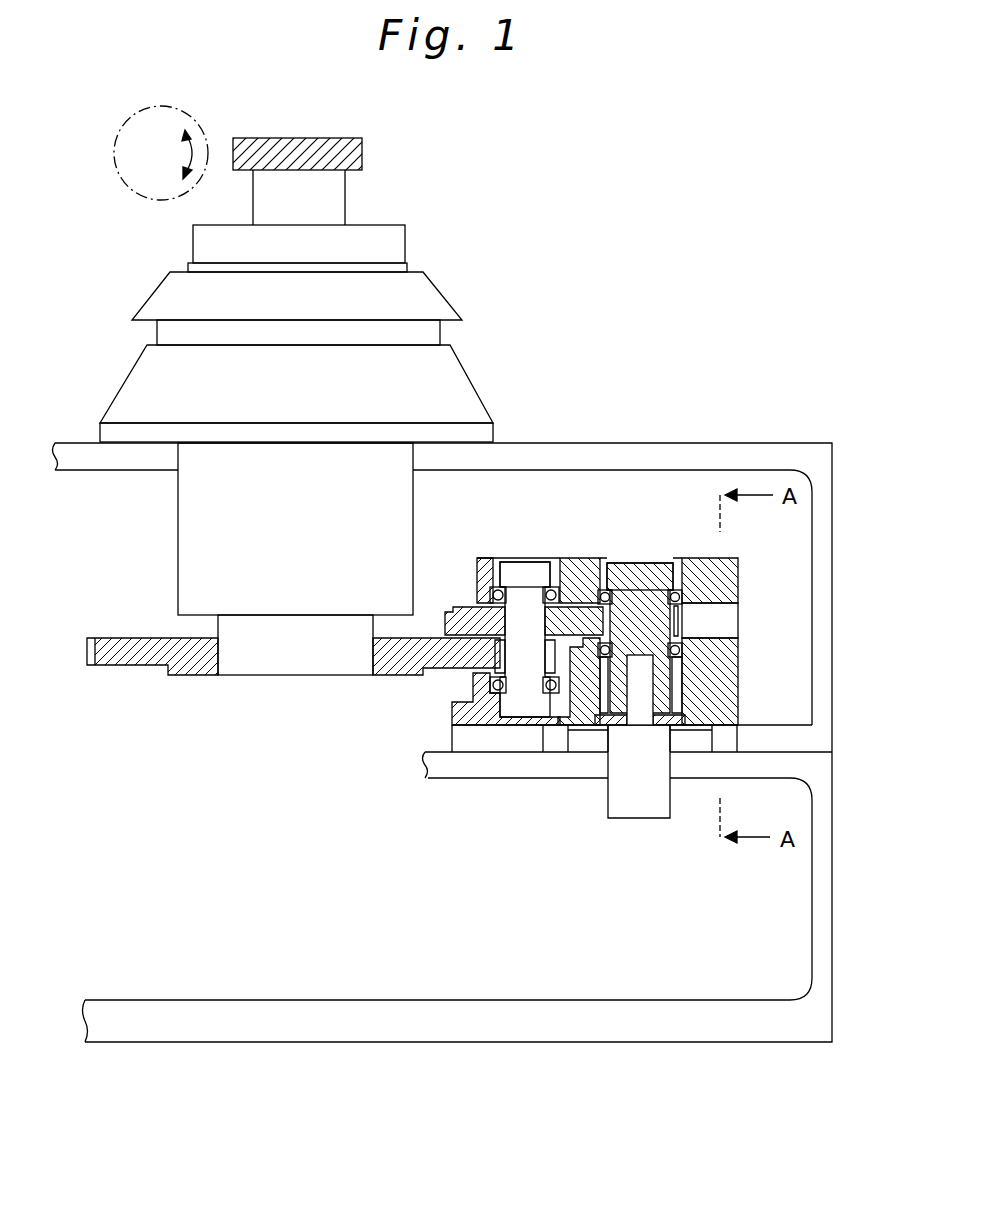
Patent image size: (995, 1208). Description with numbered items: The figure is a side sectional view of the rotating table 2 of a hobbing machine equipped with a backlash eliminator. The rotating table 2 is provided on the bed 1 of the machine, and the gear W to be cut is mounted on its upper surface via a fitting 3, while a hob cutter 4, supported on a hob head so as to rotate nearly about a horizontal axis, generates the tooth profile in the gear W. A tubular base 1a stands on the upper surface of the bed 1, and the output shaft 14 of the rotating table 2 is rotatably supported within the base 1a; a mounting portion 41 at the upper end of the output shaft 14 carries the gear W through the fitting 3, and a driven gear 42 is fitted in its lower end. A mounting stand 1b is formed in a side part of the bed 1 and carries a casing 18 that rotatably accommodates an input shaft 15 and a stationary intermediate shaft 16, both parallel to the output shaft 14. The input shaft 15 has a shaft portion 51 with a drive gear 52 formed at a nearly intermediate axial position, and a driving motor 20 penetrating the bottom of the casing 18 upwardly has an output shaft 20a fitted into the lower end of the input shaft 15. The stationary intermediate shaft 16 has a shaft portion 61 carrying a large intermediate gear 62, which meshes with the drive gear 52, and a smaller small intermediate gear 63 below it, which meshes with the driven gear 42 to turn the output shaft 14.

The bed 1 is at (303, 1000).
The tubular base 1a is at (467, 373).
The mounting stand 1b is at (793, 722).
The rotating table 2 is at (447, 297).
The fitting 3 is at (380, 227).
The hob cutter 4 is at (200, 116).
The output shaft 14 is at (185, 538).
The input shaft 15 is at (655, 558).
The stationary intermediate shaft 16 is at (537, 556).
The casing 18 is at (738, 578).
The driving motor 20 is at (653, 818).
The output shaft of the driving motor 20a is at (641, 682).
The mounting portion 41 is at (397, 277).
The driven gear 42 is at (153, 670).
The shaft portion 51 is at (627, 560).
The drive gear 52 is at (677, 620).
The shaft portion 61 is at (517, 560).
The large intermediate gear 62 is at (463, 605).
The small intermediate gear 63 is at (557, 670).
The gear to be cut W is at (360, 152).